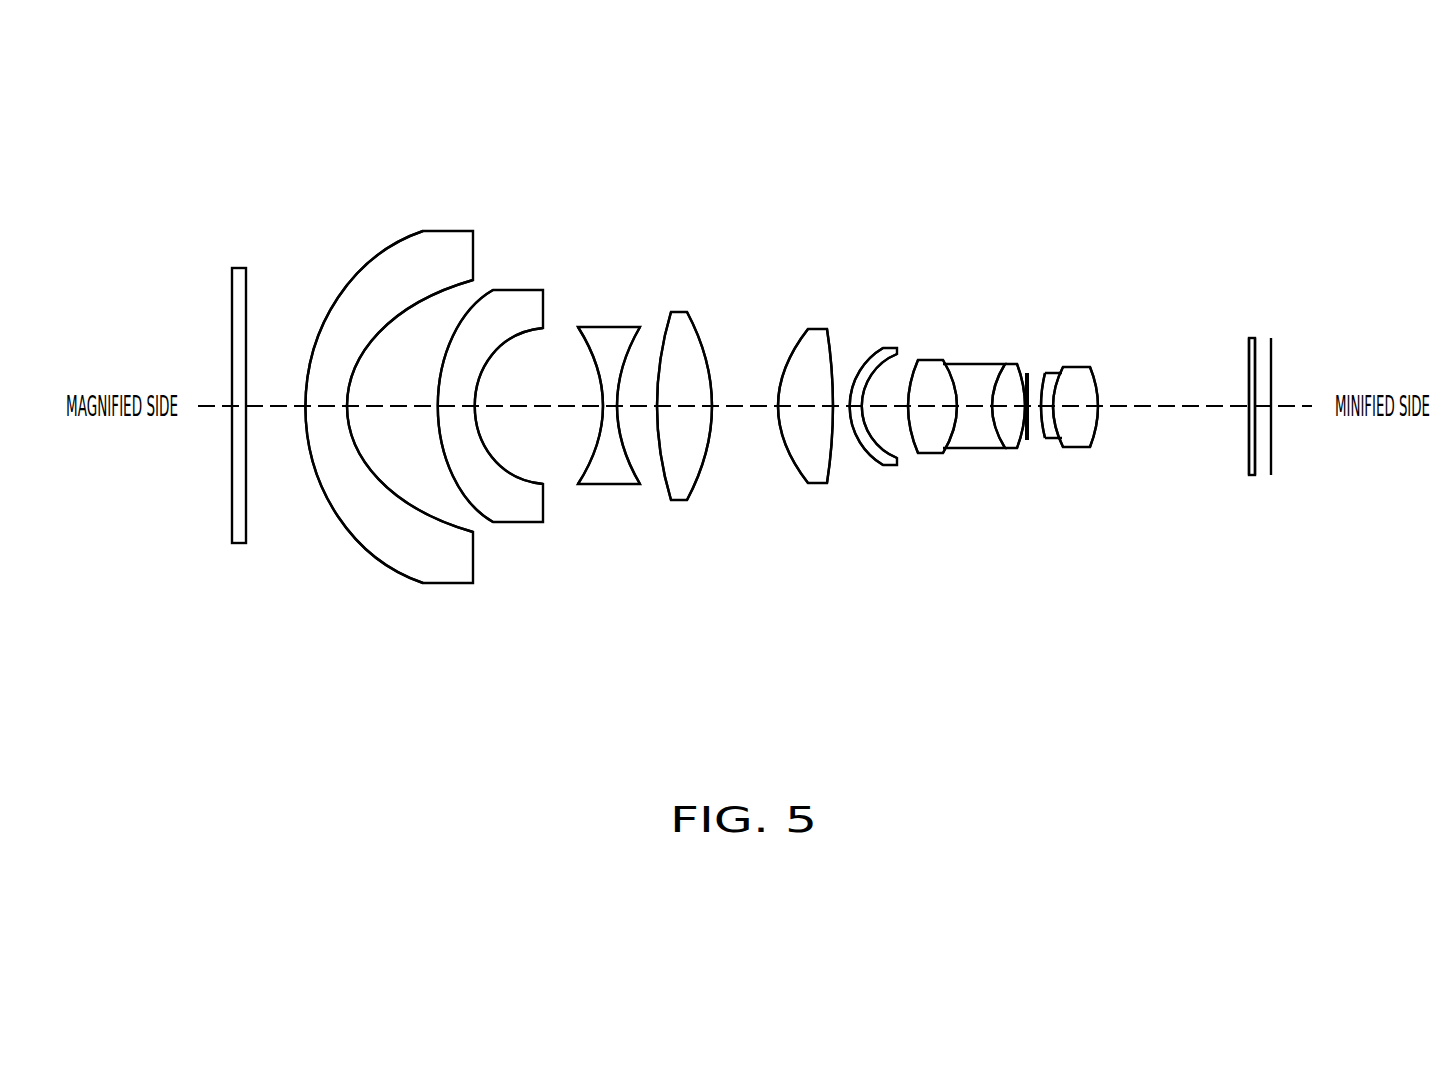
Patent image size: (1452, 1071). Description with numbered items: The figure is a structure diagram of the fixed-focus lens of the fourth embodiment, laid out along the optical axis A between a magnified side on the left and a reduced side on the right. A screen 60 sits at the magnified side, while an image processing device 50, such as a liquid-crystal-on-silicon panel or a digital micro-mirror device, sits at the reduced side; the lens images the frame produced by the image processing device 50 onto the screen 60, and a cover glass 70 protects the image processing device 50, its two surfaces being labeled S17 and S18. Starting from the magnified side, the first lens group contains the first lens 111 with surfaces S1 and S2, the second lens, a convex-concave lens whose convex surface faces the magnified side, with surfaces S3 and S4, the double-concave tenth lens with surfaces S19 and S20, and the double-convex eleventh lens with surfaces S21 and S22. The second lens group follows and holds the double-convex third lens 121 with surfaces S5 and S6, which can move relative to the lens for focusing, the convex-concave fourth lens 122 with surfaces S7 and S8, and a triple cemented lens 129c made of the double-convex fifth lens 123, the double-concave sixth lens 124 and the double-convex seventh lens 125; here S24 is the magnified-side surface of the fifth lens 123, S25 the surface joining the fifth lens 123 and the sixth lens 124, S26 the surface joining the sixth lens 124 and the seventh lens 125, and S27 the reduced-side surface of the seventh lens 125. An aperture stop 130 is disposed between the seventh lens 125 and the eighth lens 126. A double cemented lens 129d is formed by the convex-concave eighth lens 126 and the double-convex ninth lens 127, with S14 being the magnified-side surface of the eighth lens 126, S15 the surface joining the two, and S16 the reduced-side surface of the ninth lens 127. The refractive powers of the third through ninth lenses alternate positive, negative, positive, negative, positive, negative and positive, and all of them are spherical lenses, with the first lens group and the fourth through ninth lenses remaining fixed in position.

The first lens 111 is at (405, 278).
The third lens 121 is at (807, 362).
The fourth lens 122 is at (872, 362).
The fifth lens 123 is at (932, 372).
The sixth lens 124 is at (970, 380).
The seventh lens 125 is at (1009, 382).
The eighth lens 126 is at (1052, 385).
The ninth lens 127 is at (1078, 392).
The triple cemented lens 129c is at (1053, 138).
The double cemented lens 129d is at (1178, 138).
The aperture stop 130 is at (1028, 425).
The screen 60 is at (246, 505).
The cover glass 70 is at (1252, 368).
The image processing device 50 is at (1272, 457).
The optical axis A is at (268, 404).
The surface S1 is at (352, 523).
The surface S2 is at (365, 463).
The surface S3 is at (450, 472).
The surface S4 is at (483, 438).
The surface S5 is at (782, 438).
The surface S6 is at (828, 468).
The surface S7 is at (875, 460).
The surface S8 is at (875, 438).
The surface S14 is at (1047, 427).
The surface S15 is at (1062, 423).
The surface S16 is at (1103, 418).
The surface S17 is at (1247, 445).
The surface S18 is at (1258, 423).
The surface S19 is at (597, 433).
The surface S20 is at (627, 452).
The surface S21 is at (658, 448).
The surface S22 is at (705, 452).
The surface S24 is at (907, 418).
The surface S25 is at (948, 383).
The surface S26 is at (992, 430).
The surface S27 is at (1022, 420).